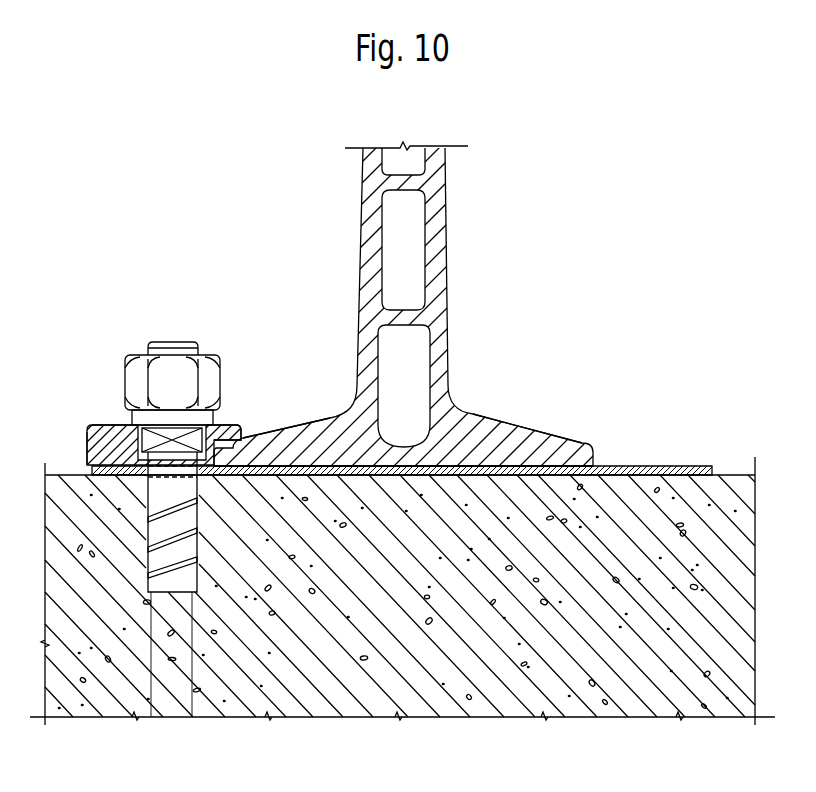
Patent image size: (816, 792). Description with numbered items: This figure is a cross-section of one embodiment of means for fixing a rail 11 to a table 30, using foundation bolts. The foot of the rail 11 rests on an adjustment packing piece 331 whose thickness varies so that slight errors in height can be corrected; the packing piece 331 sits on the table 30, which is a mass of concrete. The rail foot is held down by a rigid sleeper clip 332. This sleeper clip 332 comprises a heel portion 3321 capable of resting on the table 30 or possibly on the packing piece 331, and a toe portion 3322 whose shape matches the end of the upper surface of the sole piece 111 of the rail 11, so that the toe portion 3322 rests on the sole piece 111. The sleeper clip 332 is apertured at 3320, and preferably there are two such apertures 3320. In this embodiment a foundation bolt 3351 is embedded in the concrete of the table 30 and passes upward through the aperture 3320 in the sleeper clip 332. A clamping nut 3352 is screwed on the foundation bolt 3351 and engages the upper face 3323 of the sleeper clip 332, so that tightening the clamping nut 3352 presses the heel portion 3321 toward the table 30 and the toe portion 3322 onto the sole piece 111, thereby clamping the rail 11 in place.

The rail 11 is at (438, 261).
The sole piece 111 is at (287, 436).
The table 30 is at (652, 520).
The adjustment packing piece 331 is at (601, 466).
The sleeper clip 332 is at (99, 426).
The aperture 3320 is at (147, 488).
The heel portion 3321 is at (110, 441).
The toe portion 3322 is at (233, 425).
The upper face 3323 is at (116, 424).
The foundation bolt 3351 is at (160, 588).
The clamping nut 3352 is at (181, 372).